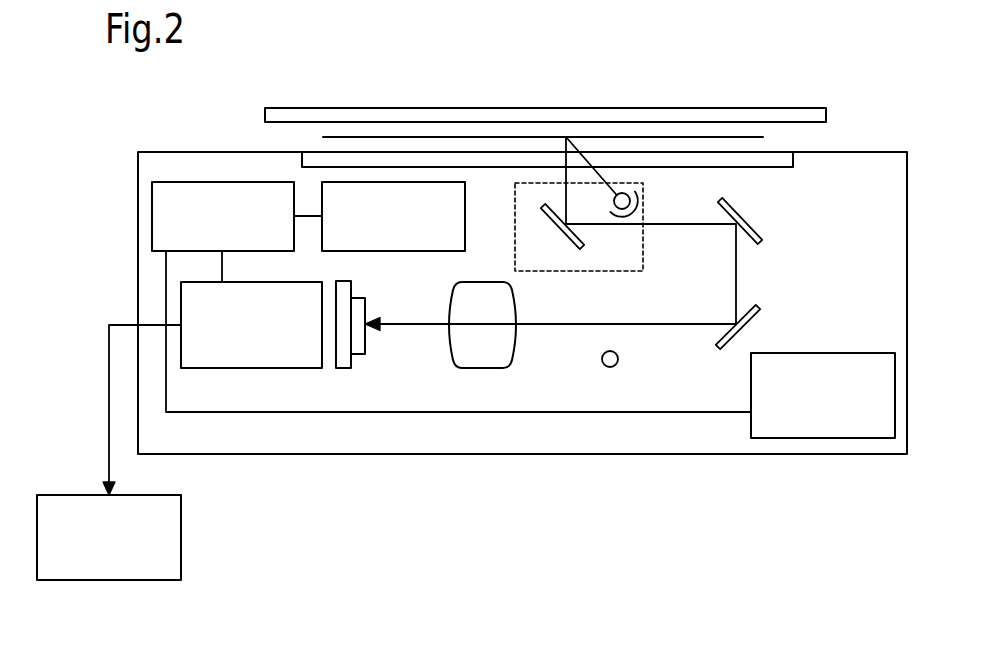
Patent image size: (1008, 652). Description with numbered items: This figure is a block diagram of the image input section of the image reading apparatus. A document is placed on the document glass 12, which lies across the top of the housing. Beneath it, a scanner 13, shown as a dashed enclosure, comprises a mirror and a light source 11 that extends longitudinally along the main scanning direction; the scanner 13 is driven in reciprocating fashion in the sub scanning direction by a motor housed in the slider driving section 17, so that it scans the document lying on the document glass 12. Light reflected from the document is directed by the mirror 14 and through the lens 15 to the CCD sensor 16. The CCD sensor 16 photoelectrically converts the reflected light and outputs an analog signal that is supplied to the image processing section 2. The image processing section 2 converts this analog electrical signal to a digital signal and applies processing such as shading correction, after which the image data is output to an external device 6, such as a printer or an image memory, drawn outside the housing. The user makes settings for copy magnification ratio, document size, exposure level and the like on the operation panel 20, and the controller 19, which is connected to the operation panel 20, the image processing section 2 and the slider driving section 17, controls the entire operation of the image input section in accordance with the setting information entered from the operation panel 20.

The image processing section 2 is at (245, 368).
The external device 6 is at (181, 518).
The light source 11 is at (635, 203).
The document glass 12 is at (778, 167).
The scanner 13 is at (575, 271).
The mirror 14 is at (753, 228).
The lens 15 is at (488, 368).
The CCD sensor 16 is at (339, 368).
The slider driving section 17 is at (818, 353).
The controller 19 is at (215, 182).
The operation panel 20 is at (492, 210).